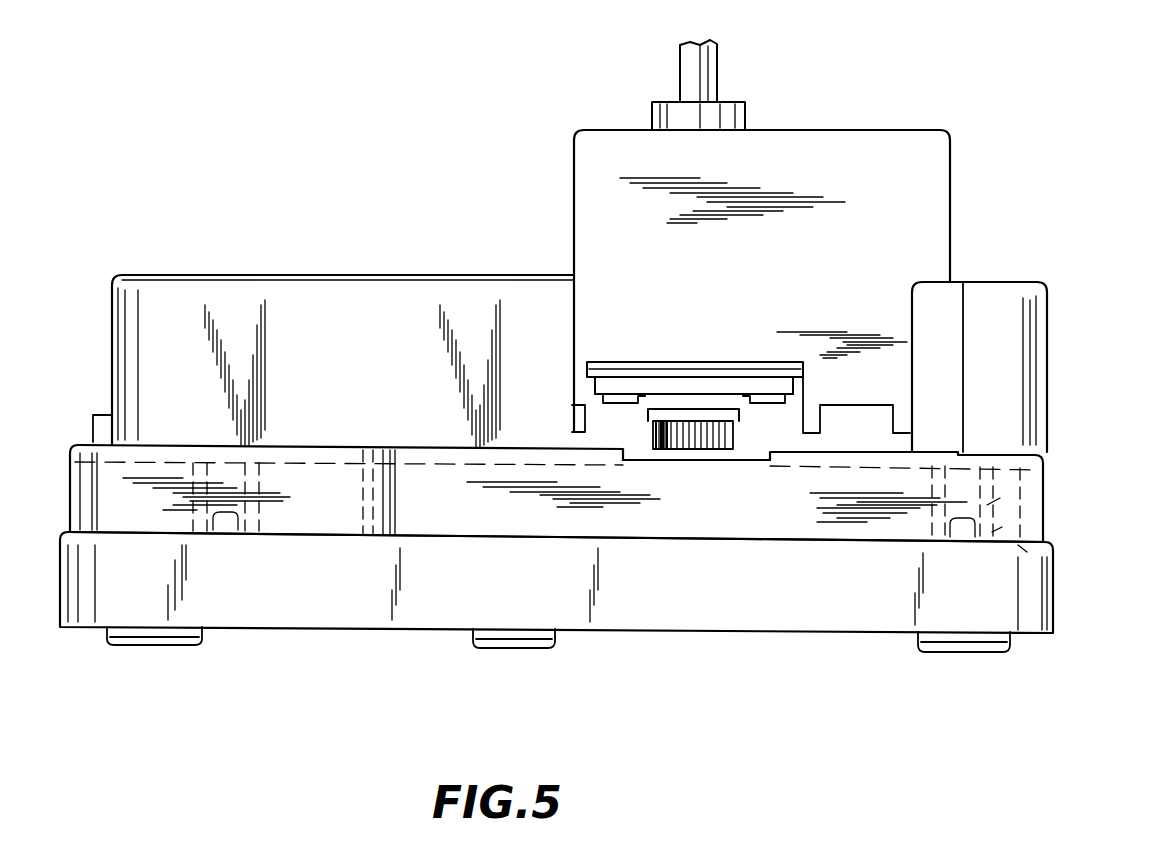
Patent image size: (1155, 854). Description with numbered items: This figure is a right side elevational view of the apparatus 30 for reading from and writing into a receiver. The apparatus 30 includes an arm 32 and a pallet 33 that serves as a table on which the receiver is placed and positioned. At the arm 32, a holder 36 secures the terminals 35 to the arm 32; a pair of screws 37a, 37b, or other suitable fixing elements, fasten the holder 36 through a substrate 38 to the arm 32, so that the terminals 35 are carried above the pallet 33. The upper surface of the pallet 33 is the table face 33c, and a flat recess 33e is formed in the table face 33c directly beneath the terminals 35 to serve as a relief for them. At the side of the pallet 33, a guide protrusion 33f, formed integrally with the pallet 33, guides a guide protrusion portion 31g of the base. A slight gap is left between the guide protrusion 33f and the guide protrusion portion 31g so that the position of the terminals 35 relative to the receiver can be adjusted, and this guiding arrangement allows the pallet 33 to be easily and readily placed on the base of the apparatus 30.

The apparatus 30 is at (1076, 314).
The arm 32 is at (828, 138).
The substrate 38 is at (768, 368).
The holder 36 is at (668, 393).
The screw 37a is at (773, 404).
The screw 37b is at (614, 404).
The terminals 35 is at (670, 433).
The pallet 33 is at (405, 502).
The table face 33c is at (437, 447).
The flat recess 33e is at (760, 456).
The guide protrusion portion 31g is at (967, 518).
The guide protrusion 33f is at (1030, 558).